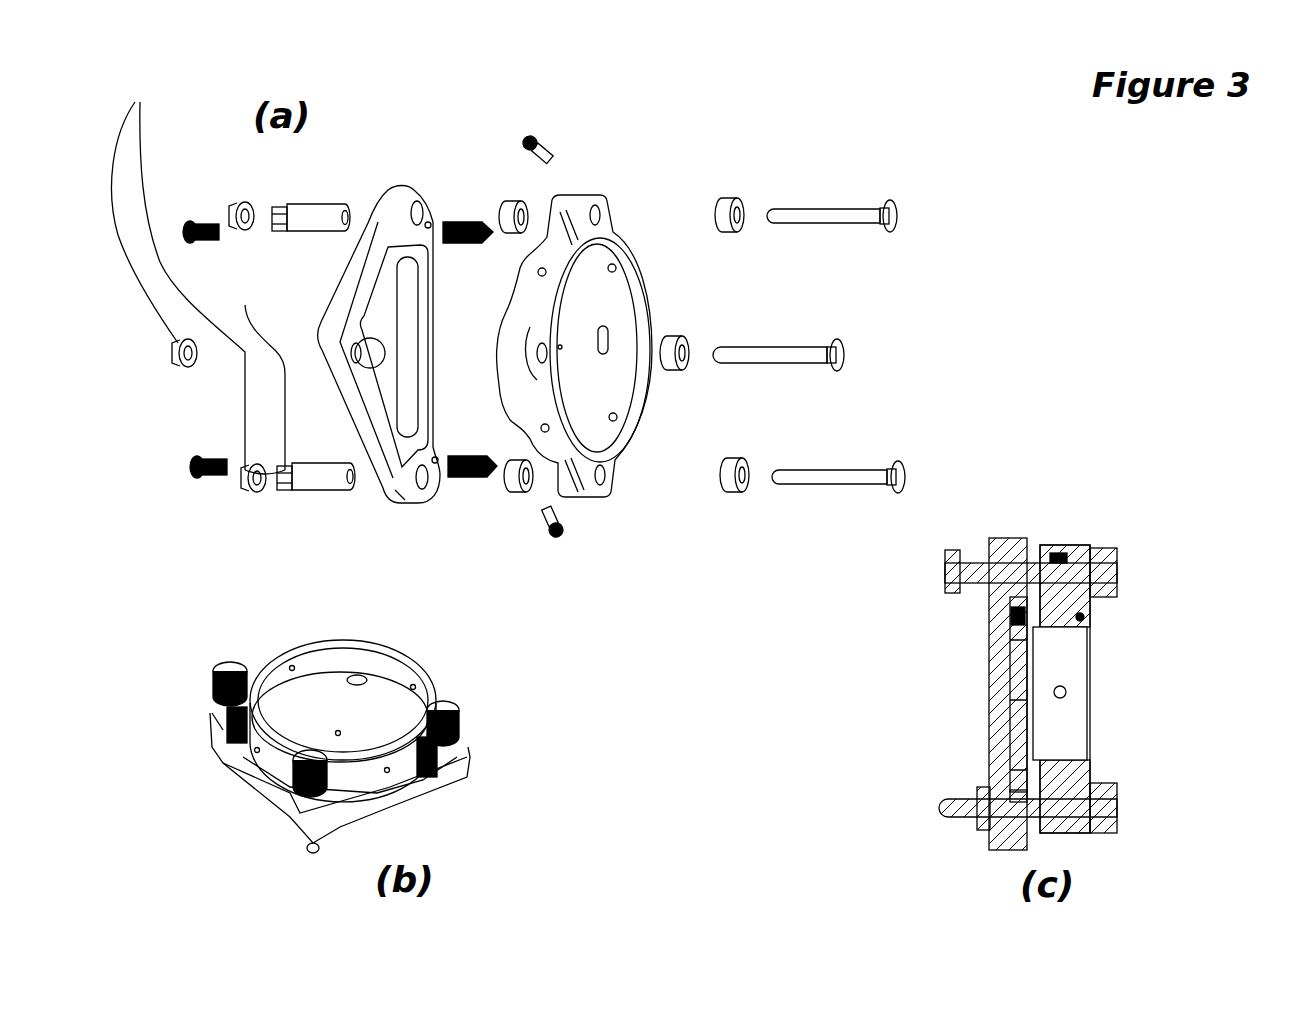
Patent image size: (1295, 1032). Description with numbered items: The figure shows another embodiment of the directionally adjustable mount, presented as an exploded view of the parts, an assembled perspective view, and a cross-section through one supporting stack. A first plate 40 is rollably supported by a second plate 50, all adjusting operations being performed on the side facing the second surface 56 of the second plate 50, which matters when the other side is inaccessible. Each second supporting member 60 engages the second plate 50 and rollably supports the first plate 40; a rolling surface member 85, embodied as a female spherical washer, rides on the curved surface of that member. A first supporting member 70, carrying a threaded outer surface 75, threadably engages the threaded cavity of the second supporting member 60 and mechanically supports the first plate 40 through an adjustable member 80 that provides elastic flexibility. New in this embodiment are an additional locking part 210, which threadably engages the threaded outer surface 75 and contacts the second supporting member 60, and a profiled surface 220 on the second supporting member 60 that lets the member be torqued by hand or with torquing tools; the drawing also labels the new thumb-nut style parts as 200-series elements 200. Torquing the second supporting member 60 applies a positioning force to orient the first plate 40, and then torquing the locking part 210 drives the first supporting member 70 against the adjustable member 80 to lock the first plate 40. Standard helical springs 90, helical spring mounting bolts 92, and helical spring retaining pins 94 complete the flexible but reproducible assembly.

The first plate 40 is at (432, 658).
The second plate 50 is at (397, 488).
The second surface of the second plate 56 is at (333, 319).
The second supporting member 60 is at (328, 497).
The first supporting member 70 is at (840, 473).
The threaded outer surface 75 is at (783, 221).
The adjustable member 80 is at (716, 212).
The rolling surface member 85 is at (500, 212).
The helical spring 90 is at (490, 478).
The helical spring mounting bolt 92 is at (190, 475).
The helical spring retaining pin 94 is at (537, 137).
The thumb nut 200 is at (437, 710).
The additional locking part 210 is at (238, 205).
The profiled surface 220 is at (198, 288).